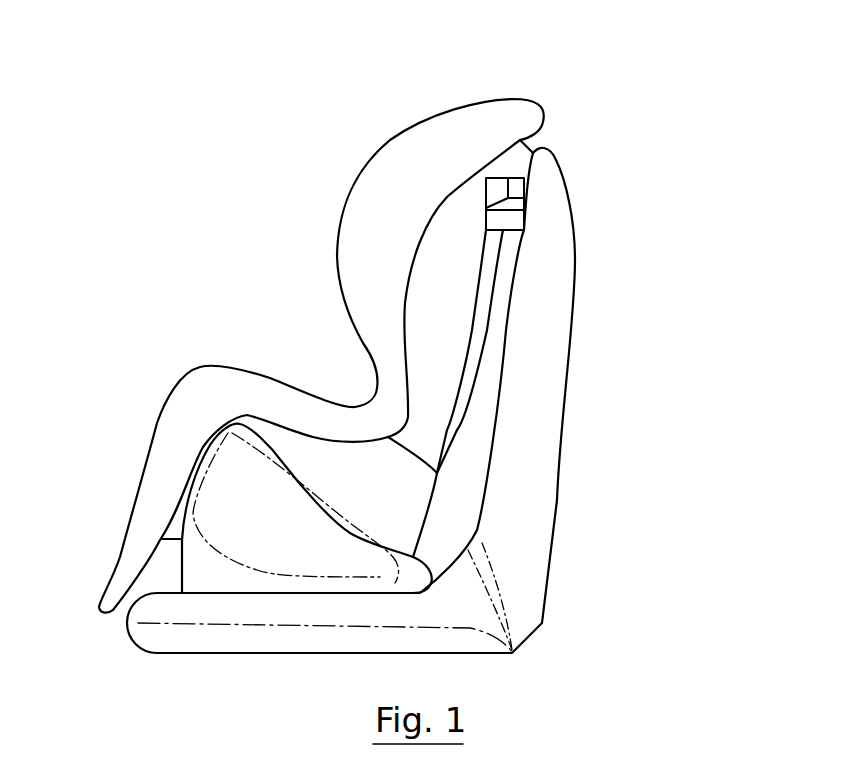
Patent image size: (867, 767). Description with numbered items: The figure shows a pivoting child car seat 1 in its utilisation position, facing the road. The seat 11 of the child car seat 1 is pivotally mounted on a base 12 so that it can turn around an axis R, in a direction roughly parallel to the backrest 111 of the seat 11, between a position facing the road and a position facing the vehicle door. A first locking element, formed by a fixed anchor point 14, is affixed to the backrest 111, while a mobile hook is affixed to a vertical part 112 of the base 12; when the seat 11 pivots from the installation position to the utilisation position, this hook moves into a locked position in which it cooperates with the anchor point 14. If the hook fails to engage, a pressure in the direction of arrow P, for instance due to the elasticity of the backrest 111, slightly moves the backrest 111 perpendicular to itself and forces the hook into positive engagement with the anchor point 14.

The pivoting child car seat 1 is at (335, 120).
The seat 11 is at (168, 467).
The backrest 111 is at (370, 185).
The vertical part 112 is at (548, 272).
The base 12 is at (560, 462).
The fixed anchor point 14 is at (517, 183).